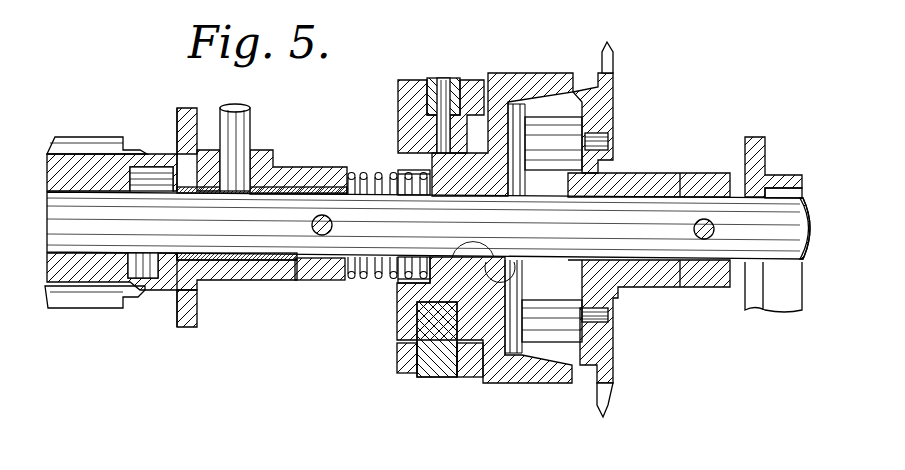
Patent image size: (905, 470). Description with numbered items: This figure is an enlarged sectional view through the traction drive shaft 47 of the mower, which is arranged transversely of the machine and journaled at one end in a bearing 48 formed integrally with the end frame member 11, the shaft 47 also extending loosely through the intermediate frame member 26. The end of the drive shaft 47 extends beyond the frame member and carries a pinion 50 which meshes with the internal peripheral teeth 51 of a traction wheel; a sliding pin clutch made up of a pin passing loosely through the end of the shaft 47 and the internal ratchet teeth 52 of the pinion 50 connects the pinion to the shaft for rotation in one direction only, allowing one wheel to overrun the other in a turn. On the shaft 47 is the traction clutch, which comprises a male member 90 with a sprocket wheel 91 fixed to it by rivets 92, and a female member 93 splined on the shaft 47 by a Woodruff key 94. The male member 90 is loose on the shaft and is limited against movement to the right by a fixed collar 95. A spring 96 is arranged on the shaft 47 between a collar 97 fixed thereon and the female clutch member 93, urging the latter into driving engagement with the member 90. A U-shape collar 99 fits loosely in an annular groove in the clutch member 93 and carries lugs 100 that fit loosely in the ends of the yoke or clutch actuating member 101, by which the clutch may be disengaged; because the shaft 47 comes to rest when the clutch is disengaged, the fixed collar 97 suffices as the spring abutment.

The end frame member 11 is at (196, 318).
The intermediate frame member 26 is at (762, 148).
The drive shaft 47 is at (385, 280).
The bearing 48 is at (258, 152).
The pinion 50 is at (107, 117).
The internal peripheral teeth 51 is at (139, 284).
The internal ratchet teeth 52 is at (155, 167).
The male clutch member 90 is at (588, 84).
The sprocket wheel 91 is at (609, 109).
The rivets 92 is at (600, 138).
The female clutch member 93 is at (534, 61).
The Woodruff key 94 is at (500, 281).
The fixed collar 95 is at (712, 288).
The spring 96 is at (389, 157).
The collar 97 is at (330, 280).
The U-shape collar 99 is at (417, 326).
The lugs 100 is at (455, 79).
The clutch actuating member 101 is at (420, 79).